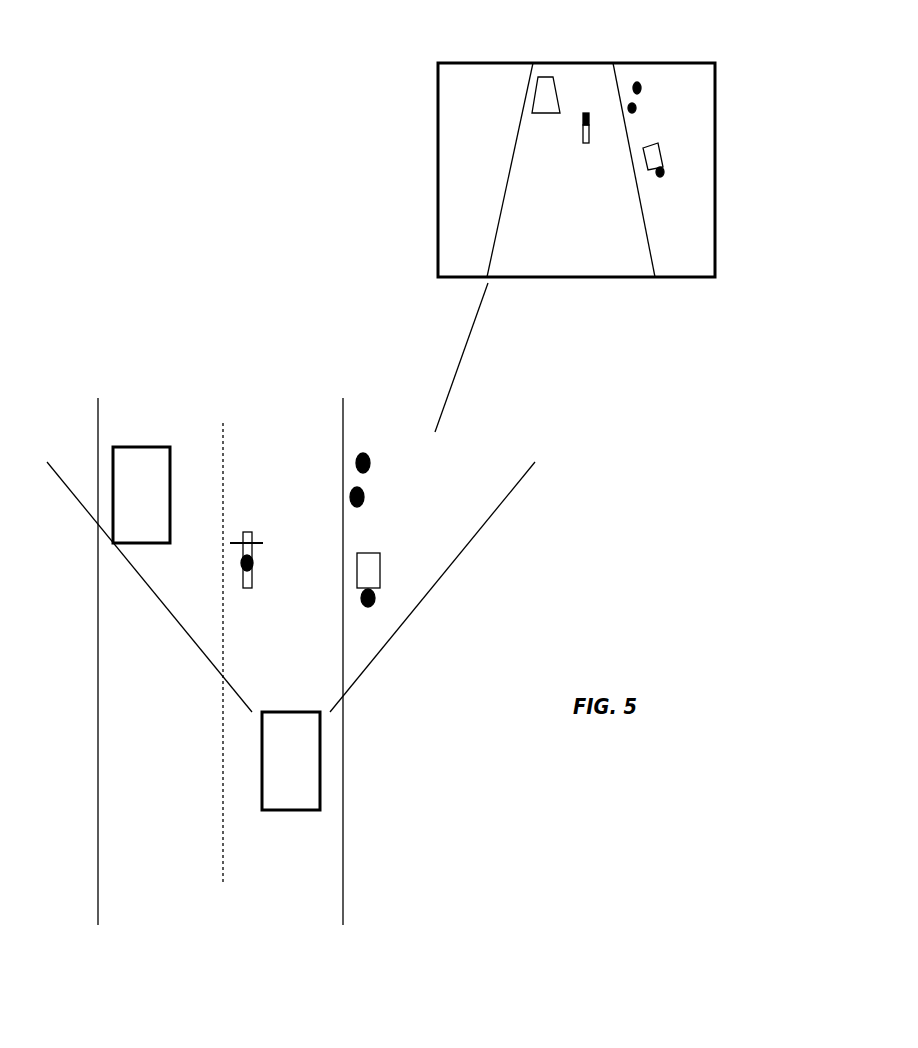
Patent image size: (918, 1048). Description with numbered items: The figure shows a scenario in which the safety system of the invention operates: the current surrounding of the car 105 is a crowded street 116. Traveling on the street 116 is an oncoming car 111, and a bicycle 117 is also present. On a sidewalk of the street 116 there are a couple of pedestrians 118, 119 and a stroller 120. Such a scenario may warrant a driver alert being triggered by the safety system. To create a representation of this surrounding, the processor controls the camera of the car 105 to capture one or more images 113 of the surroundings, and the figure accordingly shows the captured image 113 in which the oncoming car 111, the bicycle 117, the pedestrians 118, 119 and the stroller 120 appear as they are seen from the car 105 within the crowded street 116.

The car 105 is at (305, 785).
The oncoming car 111 is at (137, 515).
The image 113 is at (438, 125).
The crowded street 116 is at (272, 376).
The bicycle 117 is at (248, 527).
The pedestrian 118 is at (365, 452).
The pedestrian 119 is at (365, 488).
The stroller 120 is at (372, 562).